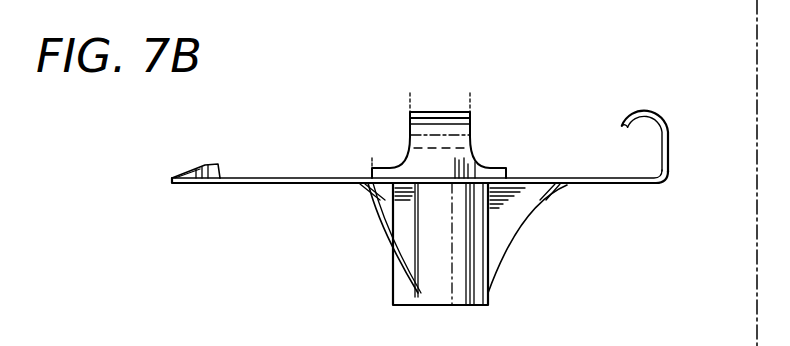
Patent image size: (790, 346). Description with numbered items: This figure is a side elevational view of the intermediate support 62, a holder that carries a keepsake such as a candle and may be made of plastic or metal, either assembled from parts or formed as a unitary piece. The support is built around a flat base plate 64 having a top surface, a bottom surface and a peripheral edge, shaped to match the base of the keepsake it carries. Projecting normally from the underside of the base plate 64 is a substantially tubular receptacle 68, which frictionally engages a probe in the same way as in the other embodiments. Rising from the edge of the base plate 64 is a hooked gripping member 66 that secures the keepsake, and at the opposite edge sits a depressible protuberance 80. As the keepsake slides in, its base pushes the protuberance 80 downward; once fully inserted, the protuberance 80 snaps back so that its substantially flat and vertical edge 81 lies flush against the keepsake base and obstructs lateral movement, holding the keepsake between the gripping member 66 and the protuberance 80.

The intermediate support 62 is at (540, 105).
The base plate 64 is at (263, 184).
The gripping member 66 is at (659, 129).
The receptacle 68 is at (455, 260).
The protuberance 80 is at (193, 173).
The vertical edge 81 is at (223, 168).